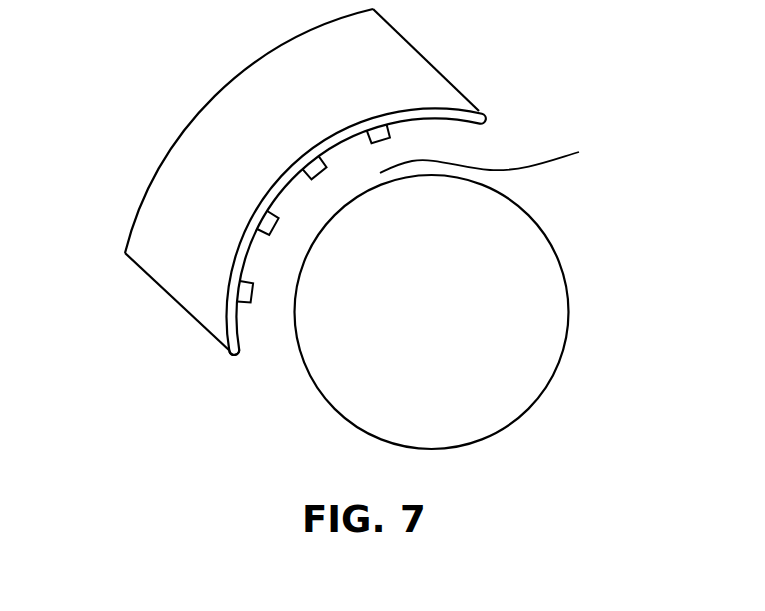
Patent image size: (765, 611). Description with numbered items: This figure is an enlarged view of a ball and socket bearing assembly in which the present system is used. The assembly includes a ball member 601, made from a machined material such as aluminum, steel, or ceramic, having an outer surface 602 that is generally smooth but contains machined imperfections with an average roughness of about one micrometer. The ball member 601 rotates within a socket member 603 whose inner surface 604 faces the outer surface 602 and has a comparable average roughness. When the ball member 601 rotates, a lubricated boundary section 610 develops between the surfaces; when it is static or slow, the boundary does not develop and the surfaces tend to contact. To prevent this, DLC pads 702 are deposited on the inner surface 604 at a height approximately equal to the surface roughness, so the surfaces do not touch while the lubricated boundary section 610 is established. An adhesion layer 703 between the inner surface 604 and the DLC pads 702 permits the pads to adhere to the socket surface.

The ball member 601 is at (440, 316).
The outer surface 602 is at (348, 418).
The socket member 603 is at (148, 203).
The inner surface 604 is at (242, 338).
The lubricated boundary section 610 is at (501, 152).
The DLC pads 702 is at (389, 137).
The adhesion layer 703 is at (451, 109).